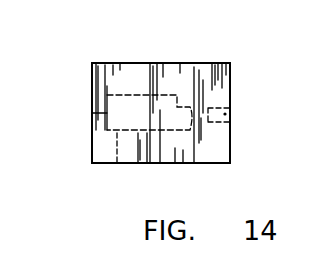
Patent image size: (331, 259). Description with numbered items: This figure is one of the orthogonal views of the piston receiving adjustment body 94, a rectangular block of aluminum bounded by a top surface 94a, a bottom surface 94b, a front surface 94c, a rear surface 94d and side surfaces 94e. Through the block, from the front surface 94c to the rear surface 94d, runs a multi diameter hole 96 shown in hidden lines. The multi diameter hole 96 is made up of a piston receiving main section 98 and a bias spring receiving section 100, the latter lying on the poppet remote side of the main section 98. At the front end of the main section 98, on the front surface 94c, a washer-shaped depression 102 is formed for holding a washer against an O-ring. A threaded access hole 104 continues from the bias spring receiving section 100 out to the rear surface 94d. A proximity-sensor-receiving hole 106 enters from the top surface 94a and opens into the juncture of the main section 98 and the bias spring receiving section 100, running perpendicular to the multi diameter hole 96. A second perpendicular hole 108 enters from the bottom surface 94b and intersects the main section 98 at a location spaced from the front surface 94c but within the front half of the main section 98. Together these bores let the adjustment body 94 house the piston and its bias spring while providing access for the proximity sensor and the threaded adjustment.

The adjustment body 94 is at (242, 64).
The top surface 94a is at (120, 63).
The bottom surface 94b is at (208, 165).
The front surface 94c is at (91, 147).
The rear surface 94d is at (230, 143).
The side surfaces 94e is at (181, 143).
The multi diameter hole 96 is at (90, 108).
The piston receiving main section 98 is at (157, 62).
The bias spring receiving section 100 is at (208, 87).
The washer-shaped depression 102 is at (91, 124).
The threaded access hole 104 is at (232, 115).
The proximity-sensor-receiving hole 106 is at (179, 72).
The second perpendicular hole 108 is at (130, 155).